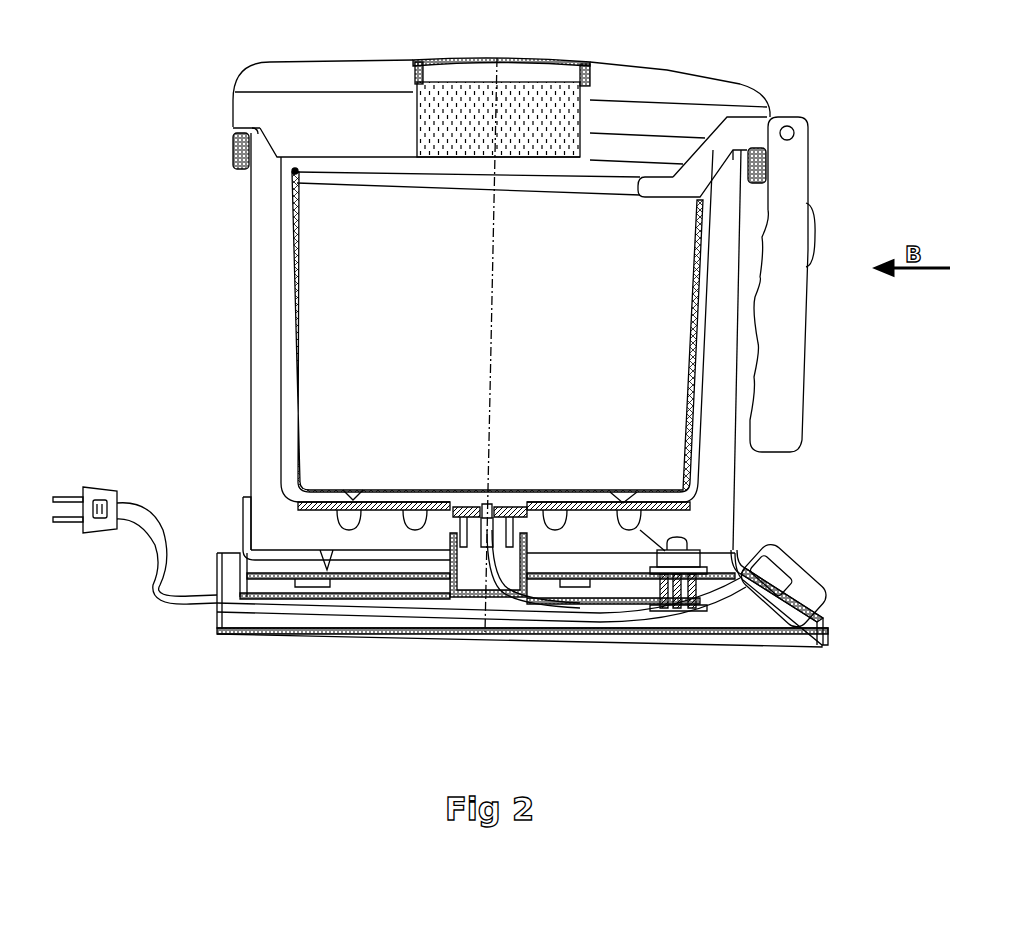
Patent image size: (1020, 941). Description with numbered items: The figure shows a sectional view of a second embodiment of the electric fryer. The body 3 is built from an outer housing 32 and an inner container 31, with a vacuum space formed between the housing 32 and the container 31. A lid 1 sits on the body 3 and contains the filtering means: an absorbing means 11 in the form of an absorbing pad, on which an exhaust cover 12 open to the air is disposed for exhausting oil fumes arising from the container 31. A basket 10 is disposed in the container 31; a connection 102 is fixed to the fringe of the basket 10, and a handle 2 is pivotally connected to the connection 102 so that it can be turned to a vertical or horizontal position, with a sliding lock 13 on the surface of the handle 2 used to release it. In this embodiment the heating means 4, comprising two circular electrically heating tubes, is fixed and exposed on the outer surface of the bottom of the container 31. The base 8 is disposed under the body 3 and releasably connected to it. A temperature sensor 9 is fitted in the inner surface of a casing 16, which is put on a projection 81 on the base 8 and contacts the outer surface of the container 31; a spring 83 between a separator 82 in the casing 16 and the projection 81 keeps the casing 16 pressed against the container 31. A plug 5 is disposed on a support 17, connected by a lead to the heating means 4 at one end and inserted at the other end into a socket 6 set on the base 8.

The lid 1 is at (430, 107).
The connection 102 is at (750, 130).
The handle 2 is at (805, 162).
The sliding lock 13 is at (814, 208).
The body 3 is at (745, 278).
The container 31 is at (705, 402).
The housing 32 is at (735, 418).
The basket 10 is at (292, 232).
The absorbing means 11 is at (443, 83).
The exhaust cover 12 is at (447, 62).
The temperature sensor 9 is at (462, 503).
The casing 16 is at (452, 553).
The projection 81 is at (447, 573).
The separator 82 is at (455, 545).
The spring 83 is at (525, 545).
The support 17 is at (243, 540).
The heating means 4 is at (693, 507).
The plug 5 is at (700, 550).
The socket 6 is at (703, 567).
The base 8 is at (824, 633).